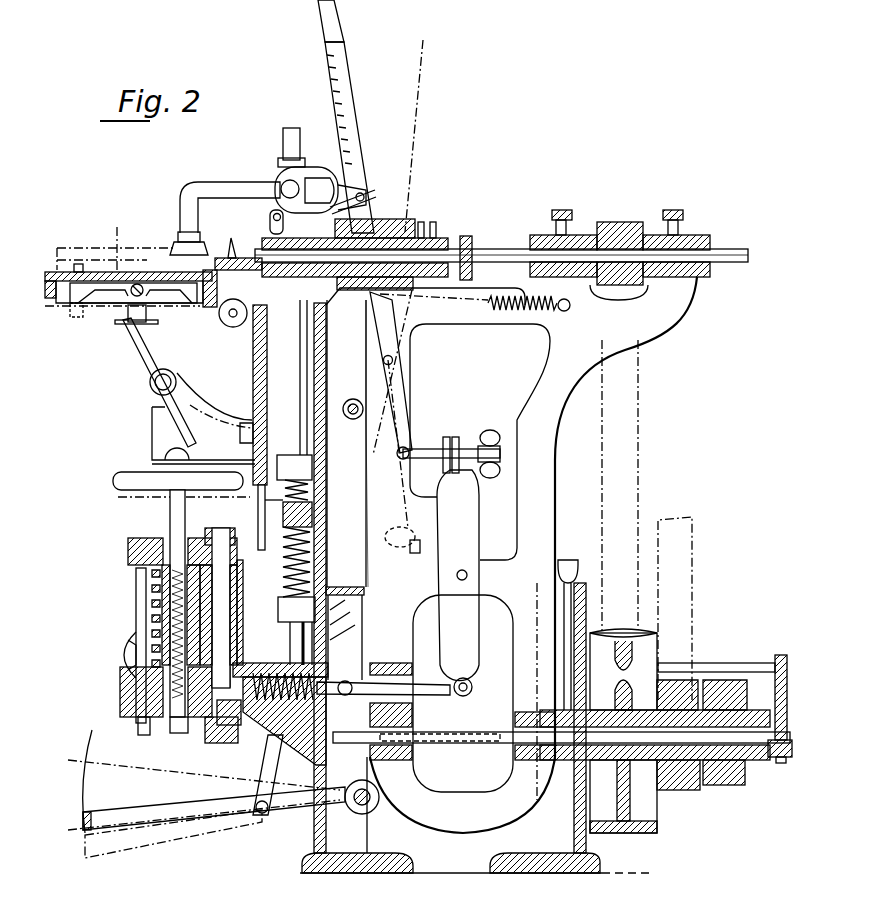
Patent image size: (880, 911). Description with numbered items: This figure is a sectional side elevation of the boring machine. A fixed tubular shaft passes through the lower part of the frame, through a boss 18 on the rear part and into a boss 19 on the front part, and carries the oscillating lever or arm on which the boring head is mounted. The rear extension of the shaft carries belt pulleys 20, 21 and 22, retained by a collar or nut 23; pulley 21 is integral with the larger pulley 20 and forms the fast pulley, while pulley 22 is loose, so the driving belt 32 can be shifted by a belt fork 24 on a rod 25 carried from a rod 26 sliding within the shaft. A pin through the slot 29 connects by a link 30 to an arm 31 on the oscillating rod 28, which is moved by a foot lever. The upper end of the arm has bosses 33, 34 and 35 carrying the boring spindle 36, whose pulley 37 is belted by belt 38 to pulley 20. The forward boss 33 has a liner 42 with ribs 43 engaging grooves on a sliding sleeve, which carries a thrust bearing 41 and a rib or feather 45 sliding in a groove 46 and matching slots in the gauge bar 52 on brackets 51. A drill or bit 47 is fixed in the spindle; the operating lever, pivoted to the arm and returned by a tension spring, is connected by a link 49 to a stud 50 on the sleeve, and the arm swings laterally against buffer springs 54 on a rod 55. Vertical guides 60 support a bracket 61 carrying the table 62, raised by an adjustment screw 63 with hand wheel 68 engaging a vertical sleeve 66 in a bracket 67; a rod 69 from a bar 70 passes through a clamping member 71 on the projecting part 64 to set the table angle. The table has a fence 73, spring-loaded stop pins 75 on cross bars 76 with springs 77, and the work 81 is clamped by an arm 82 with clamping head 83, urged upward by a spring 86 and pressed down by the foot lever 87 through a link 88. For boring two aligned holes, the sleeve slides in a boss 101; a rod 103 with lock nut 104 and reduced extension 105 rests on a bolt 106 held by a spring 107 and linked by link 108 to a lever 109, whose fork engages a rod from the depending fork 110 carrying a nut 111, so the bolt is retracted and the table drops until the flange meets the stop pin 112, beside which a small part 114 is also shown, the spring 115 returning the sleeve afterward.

The boss 18 is at (535, 770).
The boss 19 is at (370, 712).
The belt pulley 20 is at (623, 630).
The belt pulley 21 is at (640, 806).
The belt pulley 22 is at (720, 790).
The collar or nut 23 is at (776, 668).
The belt fork 24 is at (680, 680).
The rod 25 is at (716, 664).
The rod 26 is at (778, 760).
The oscillating rod 28 is at (362, 806).
The slot 29 is at (463, 697).
The link 30 is at (426, 744).
The arm 31 is at (358, 784).
The driving belt 32 is at (692, 545).
The boss 33 is at (412, 200).
The boss 34 is at (540, 236).
The boss 35 is at (690, 236).
The boring spindle 36 is at (737, 249).
The pulley 37 is at (630, 222).
The belt 38 is at (640, 396).
The antifrictional thrust bearing 41 is at (264, 246).
The liner 42 is at (372, 204).
The ribs 43 is at (348, 108).
The rib or feather 45 is at (470, 238).
The groove 46 is at (390, 222).
The drill or bit 47 is at (172, 248).
The link 49 is at (338, 172).
The stud 50 is at (270, 222).
The brackets 51 is at (350, 360).
The index plate or gauge bar 52 is at (430, 222).
The buffer springs 54 is at (352, 398).
The rod 55 is at (352, 420).
The vertical guides 60 is at (258, 520).
The bracket 61 is at (240, 327).
The table 62 is at (50, 302).
The vertical adjustment screw 63 is at (170, 516).
The forwardly projecting part 64 is at (150, 428).
The vertical sleeve 66 is at (145, 592).
The bracket 67 is at (270, 664).
The hand wheel 68 is at (118, 475).
The rod 69 is at (152, 350).
The bar 70 is at (148, 318).
The screw clamping member 71 is at (150, 386).
The angle iron fence 73 is at (200, 276).
The stop pins 75 is at (78, 262).
The cross bars 76 is at (100, 305).
The springs 77 is at (221, 320).
The work 81 is at (105, 243).
The arm 82 is at (208, 183).
The clamping head 83 is at (180, 234).
The spring 86 is at (283, 576).
The foot operated lever 87 is at (122, 812).
The link 88 is at (262, 770).
The boss 101 is at (146, 735).
The rod 103 is at (236, 600).
The lock nut 104 is at (220, 530).
The reduced extension 105 is at (240, 720).
The bolt 106 is at (238, 658).
The helical compression spring 107 is at (322, 684).
The link 108 is at (395, 682).
The lever 109 is at (480, 582).
The depending fork 110 is at (404, 420).
The nut 111 is at (504, 444).
The stop pin 112 is at (136, 608).
The lever 114 is at (120, 660).
The helical compression spring 115 is at (150, 628).